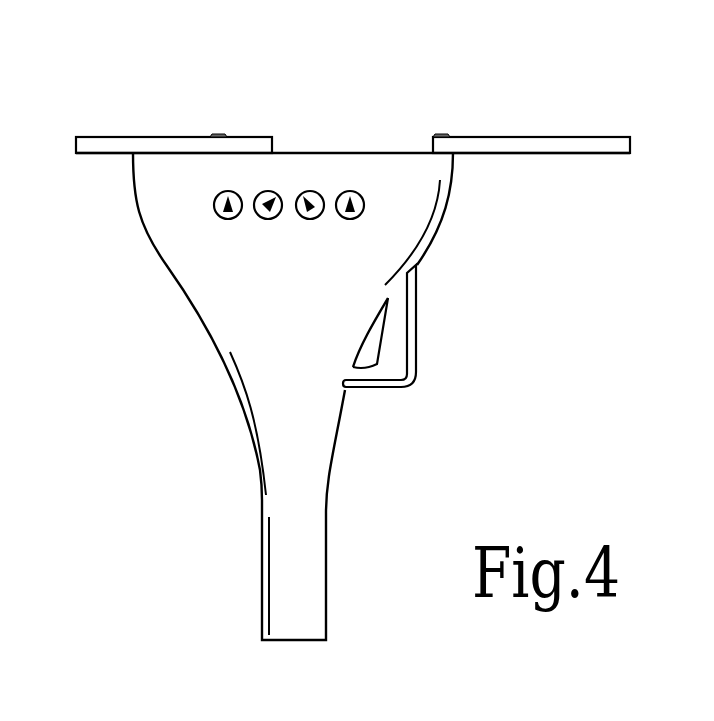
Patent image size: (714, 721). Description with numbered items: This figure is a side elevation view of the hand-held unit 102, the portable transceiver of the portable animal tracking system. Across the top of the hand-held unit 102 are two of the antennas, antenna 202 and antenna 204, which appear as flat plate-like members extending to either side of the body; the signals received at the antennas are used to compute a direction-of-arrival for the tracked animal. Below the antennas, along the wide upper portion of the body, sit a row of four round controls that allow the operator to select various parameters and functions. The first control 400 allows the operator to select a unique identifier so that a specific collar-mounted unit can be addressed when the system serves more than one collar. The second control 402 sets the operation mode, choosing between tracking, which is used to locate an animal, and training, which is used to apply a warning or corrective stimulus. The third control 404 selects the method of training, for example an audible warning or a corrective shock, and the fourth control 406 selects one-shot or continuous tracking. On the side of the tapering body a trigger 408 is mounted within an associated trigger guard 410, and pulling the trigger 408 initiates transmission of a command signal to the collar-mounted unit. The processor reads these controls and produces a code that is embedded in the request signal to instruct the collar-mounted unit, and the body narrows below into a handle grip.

The hand-held unit 102 is at (436, 101).
The antenna 202 is at (598, 137).
The antenna 204 is at (107, 145).
The first control 400 is at (213, 205).
The second control 402 is at (265, 219).
The third control 404 is at (318, 192).
The fourth control 406 is at (360, 192).
The trigger 408 is at (378, 355).
The trigger guard 410 is at (418, 320).